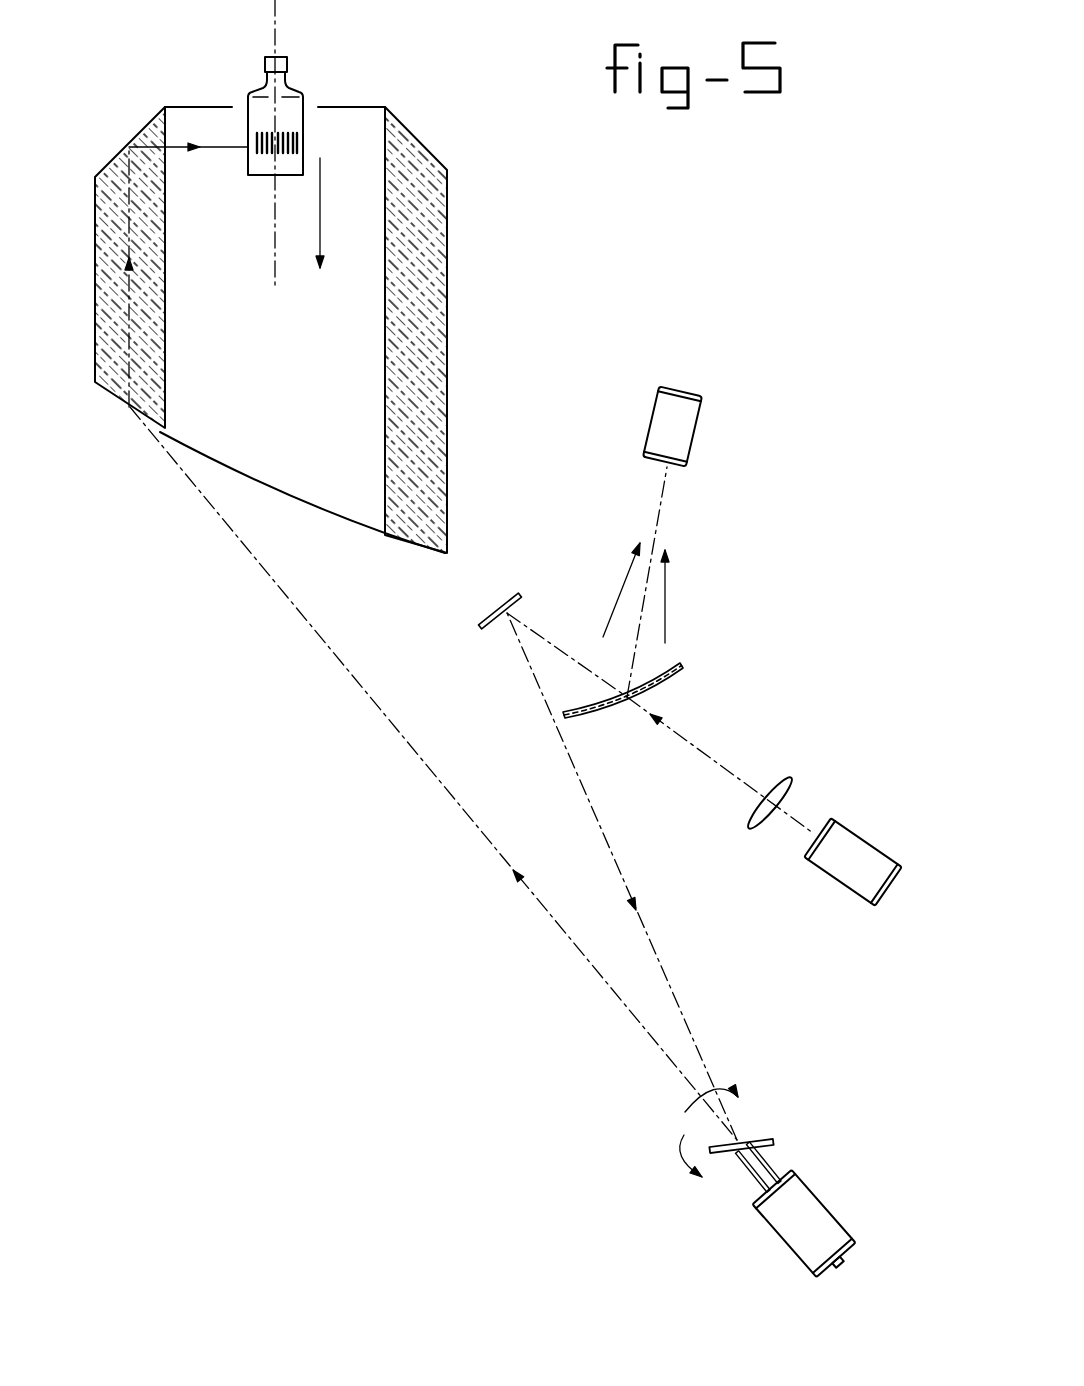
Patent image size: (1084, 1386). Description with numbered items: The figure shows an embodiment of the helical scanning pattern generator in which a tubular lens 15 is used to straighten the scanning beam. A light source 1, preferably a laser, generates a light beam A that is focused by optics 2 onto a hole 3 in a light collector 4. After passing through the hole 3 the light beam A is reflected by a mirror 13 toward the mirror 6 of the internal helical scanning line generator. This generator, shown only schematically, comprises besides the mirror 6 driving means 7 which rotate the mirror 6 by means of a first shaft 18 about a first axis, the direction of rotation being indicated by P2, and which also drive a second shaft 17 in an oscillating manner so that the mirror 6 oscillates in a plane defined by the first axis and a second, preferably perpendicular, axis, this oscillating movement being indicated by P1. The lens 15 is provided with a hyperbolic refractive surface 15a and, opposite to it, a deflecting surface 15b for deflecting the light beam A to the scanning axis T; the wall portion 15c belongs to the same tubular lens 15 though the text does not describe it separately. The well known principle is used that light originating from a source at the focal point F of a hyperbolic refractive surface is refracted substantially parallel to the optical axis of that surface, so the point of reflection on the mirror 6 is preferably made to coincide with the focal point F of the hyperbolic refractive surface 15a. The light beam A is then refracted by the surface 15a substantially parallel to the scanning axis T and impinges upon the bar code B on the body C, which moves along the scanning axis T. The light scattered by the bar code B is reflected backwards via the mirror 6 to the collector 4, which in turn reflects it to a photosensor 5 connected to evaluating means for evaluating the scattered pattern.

The light source 1 is at (850, 847).
The optics 2 is at (778, 782).
The hole 3 is at (645, 702).
The light collector 4 is at (672, 667).
The photosensor 5 is at (683, 428).
The mirror 6 is at (773, 1140).
The driving means 7 is at (820, 1220).
The mirror 13 is at (505, 598).
The lens 15 is at (337, 331).
The hyperbolic refractive surface 15a is at (410, 547).
The deflecting surface 15b is at (417, 137).
The tank top wall 15c is at (385, 112).
The second shaft 17 is at (737, 1177).
The first shaft 18 is at (767, 1168).
The light beam A is at (638, 910).
The bar code B is at (272, 135).
The body C is at (253, 142).
The focal point F is at (736, 1140).
The scanning axis T is at (299, 149).
The oscillating movement P1 is at (670, 1156).
The direction of rotation P2 is at (692, 1098).